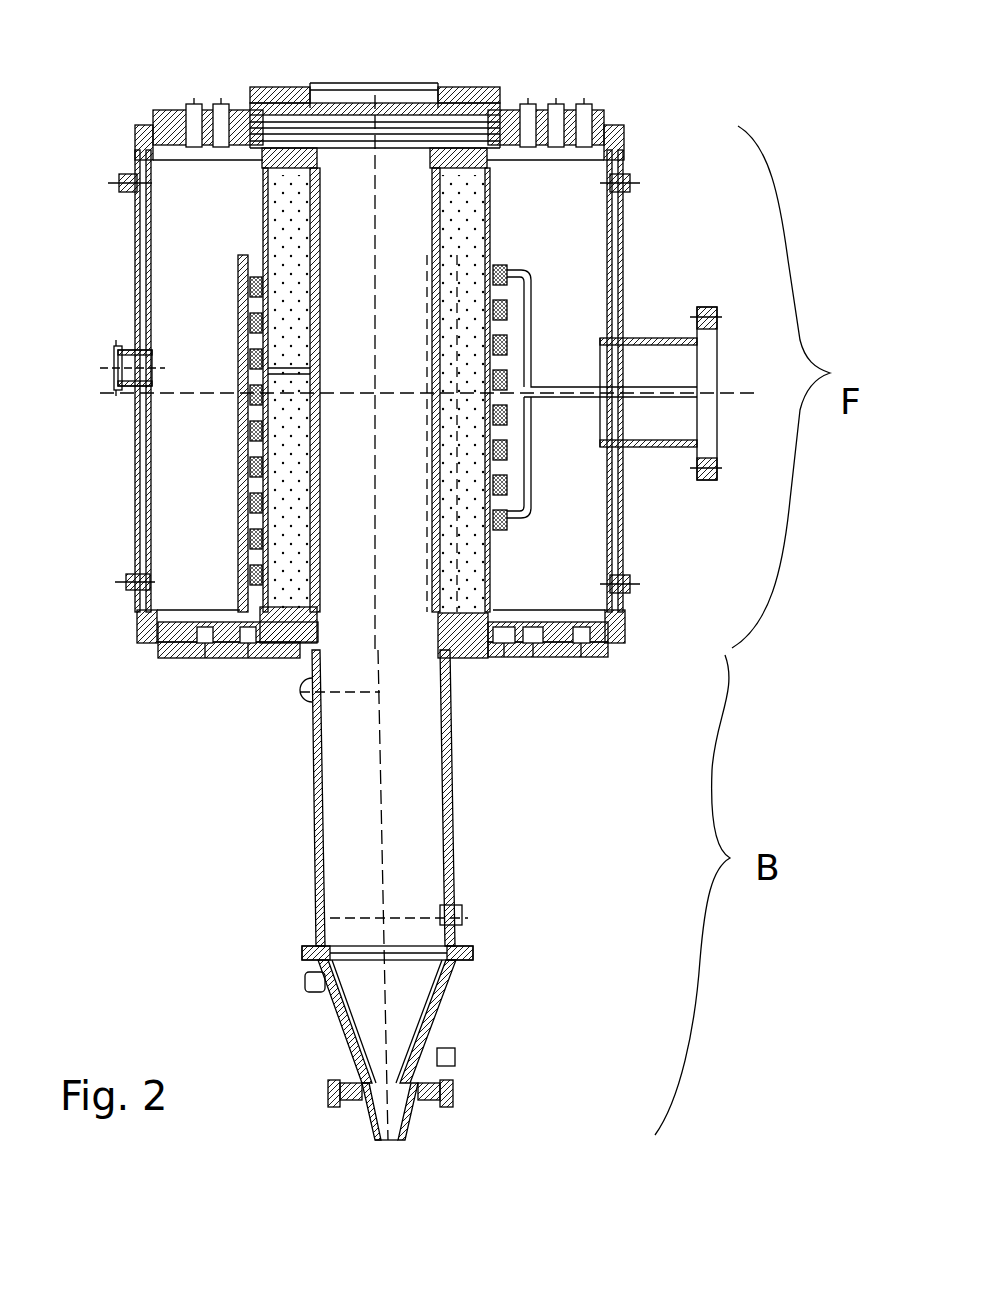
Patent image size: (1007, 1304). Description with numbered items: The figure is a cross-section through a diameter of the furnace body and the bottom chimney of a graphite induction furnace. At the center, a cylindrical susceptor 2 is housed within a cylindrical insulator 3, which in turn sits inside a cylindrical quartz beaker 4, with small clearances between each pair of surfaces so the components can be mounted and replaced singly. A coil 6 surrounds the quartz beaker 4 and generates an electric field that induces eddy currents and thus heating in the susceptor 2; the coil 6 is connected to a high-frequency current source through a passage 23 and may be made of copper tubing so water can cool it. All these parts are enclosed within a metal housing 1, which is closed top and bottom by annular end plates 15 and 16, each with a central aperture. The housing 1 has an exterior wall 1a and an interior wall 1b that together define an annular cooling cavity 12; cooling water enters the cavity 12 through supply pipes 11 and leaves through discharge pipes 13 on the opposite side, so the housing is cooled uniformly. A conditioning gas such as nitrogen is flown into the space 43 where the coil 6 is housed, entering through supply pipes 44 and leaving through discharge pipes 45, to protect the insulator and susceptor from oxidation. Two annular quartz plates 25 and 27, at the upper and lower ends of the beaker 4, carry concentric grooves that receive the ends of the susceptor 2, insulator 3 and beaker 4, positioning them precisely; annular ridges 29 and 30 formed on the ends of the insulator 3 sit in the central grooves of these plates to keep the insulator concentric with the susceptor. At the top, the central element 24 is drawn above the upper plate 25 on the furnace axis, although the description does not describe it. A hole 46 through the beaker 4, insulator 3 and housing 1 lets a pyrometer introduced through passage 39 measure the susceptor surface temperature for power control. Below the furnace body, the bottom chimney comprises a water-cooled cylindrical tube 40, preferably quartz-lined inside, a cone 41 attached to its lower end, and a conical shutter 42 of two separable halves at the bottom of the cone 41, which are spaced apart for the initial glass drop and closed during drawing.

The housing 1 is at (120, 268).
The exterior wall 1a is at (134, 428).
The interior wall 1b is at (150, 452).
The susceptor 2 is at (318, 316).
The insulator 3 is at (300, 270).
The quartz beaker 4 is at (258, 208).
The coil 6 is at (250, 277).
The water supply pipes 11 is at (122, 182).
The cooling cavity 12 is at (335, 384).
The discharge pipes 13 is at (640, 583).
The top end plate 15 is at (165, 128).
The bottom end plate 16 is at (178, 652).
The passage 23 is at (672, 373).
The central inlet tube 24 is at (362, 168).
The upper quartz plate 25 is at (462, 163).
The lower quartz plate 27 is at (477, 650).
The annular ridge 29 is at (290, 645).
The annular ridge 30 is at (287, 168).
The passage 39 is at (130, 381).
The cylindrical tube 40 is at (453, 820).
The cone 41 is at (447, 1005).
The conical shutter 42 is at (410, 1122).
The space 43 is at (588, 253).
The gas supply pipes 44 is at (636, 184).
The gas discharge pipes 45 is at (130, 594).
The hole 46 is at (255, 378).